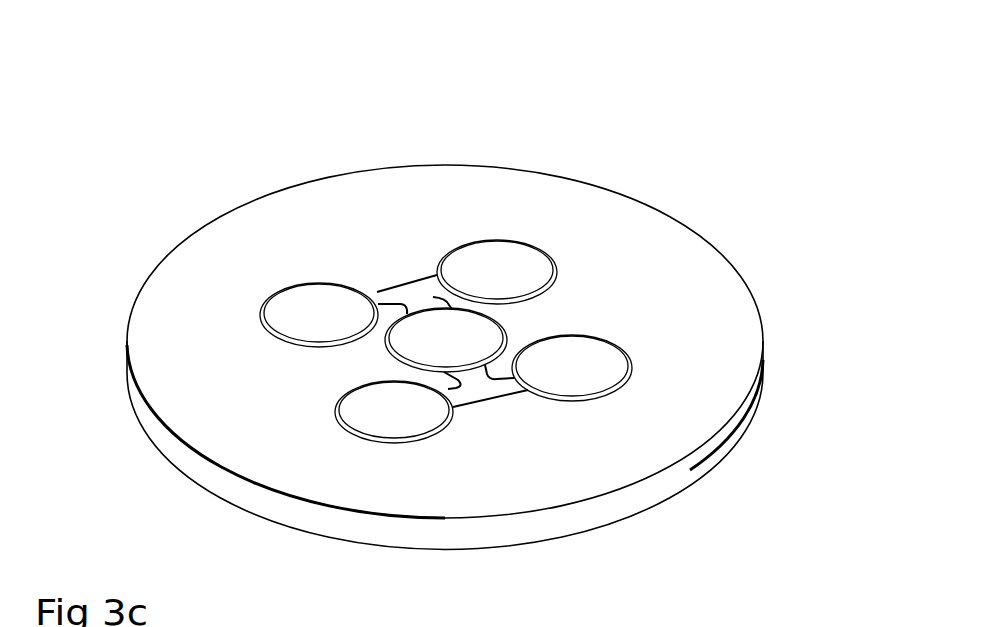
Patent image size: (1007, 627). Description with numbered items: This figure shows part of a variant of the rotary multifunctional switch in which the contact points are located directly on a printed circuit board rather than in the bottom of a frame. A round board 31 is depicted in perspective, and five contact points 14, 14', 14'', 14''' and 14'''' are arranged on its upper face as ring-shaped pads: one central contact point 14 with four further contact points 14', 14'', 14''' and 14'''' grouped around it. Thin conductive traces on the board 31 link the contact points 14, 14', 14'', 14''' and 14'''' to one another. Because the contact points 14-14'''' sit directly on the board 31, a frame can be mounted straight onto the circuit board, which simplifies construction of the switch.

The contact point 14 is at (407, 196).
The contact point 14' is at (271, 220).
The contact point 14'' is at (497, 178).
The contact point 14''' is at (684, 422).
The contact point 14'''' is at (512, 494).
The substrate disk 31 is at (625, 245).